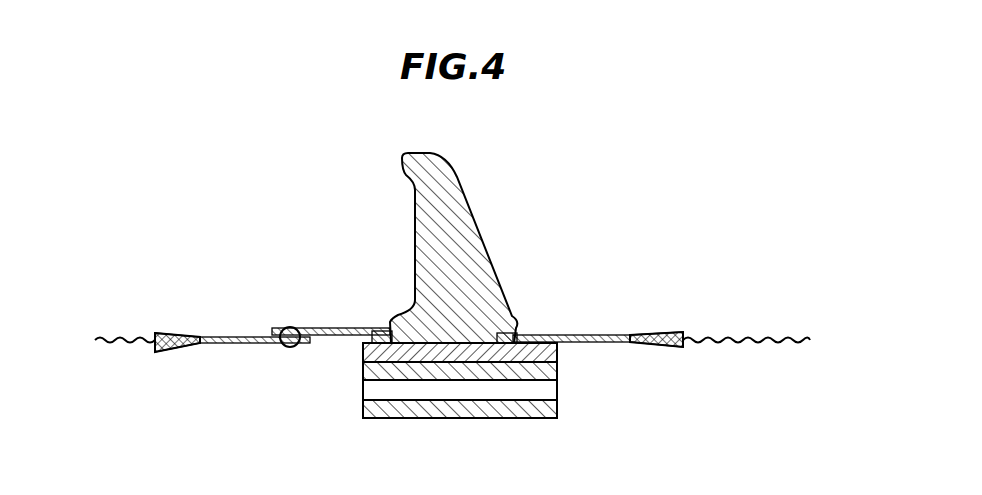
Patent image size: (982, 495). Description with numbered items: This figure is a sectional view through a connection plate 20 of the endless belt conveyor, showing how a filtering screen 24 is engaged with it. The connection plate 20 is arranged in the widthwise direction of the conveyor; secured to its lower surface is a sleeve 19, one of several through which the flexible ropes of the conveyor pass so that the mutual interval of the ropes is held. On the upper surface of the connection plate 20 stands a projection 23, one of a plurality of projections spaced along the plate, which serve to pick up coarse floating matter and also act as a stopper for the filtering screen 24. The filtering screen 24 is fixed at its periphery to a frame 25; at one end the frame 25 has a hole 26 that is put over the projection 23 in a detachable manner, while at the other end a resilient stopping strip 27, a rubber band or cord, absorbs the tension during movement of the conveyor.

The sleeve 19 is at (413, 410).
The connection plate 20 is at (362, 362).
The projection 23 is at (468, 222).
The filtering screen 24 is at (733, 336).
The frame 25 is at (600, 334).
The hole 26 is at (508, 303).
The resilient stopping strip 27 is at (345, 330).